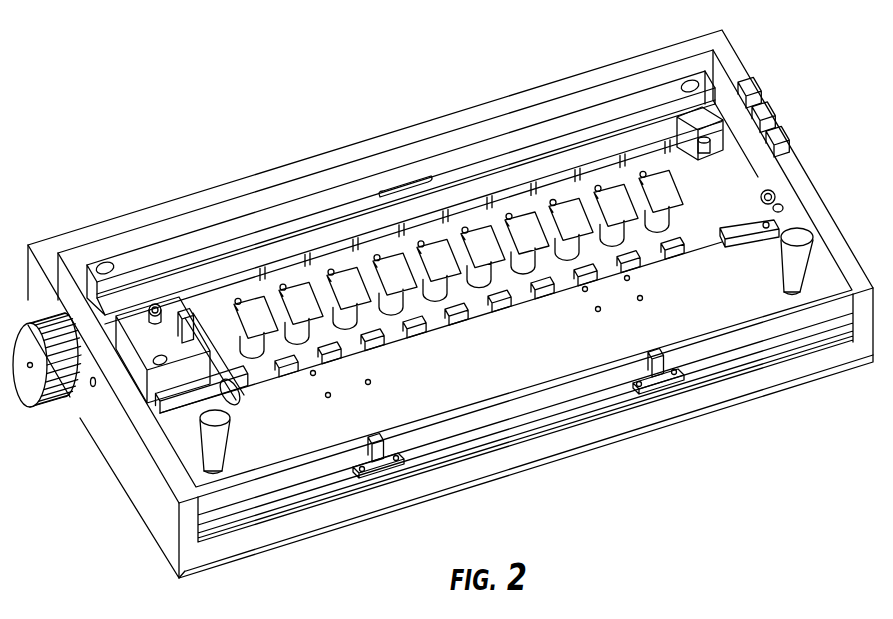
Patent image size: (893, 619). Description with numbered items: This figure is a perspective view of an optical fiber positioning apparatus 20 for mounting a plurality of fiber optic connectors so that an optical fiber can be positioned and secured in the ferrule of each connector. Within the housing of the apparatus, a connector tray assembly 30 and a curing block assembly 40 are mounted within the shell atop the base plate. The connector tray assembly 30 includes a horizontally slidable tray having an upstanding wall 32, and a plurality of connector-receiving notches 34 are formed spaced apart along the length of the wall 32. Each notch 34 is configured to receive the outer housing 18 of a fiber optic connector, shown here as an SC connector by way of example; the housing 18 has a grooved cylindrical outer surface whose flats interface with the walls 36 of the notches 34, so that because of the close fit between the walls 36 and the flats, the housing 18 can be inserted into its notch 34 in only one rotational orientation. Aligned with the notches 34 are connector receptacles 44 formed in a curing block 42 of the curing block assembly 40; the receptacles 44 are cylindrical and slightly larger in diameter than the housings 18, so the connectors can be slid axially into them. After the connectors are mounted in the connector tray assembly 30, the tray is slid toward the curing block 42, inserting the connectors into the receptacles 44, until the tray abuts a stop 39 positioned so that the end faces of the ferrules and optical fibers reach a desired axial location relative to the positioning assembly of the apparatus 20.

The optical fiber positioning apparatus 20 is at (450, 301).
The curing block assembly 40 is at (405, 197).
The curing block 42 is at (74, 401).
The outer housing 18 is at (170, 442).
The connector tray assembly 30 is at (525, 385).
The upstanding wall 32 is at (447, 276).
The notches 34 is at (399, 366).
The walls of the notches 36 is at (481, 307).
The connector receptacles 44 is at (458, 290).
The stop 39 is at (803, 144).